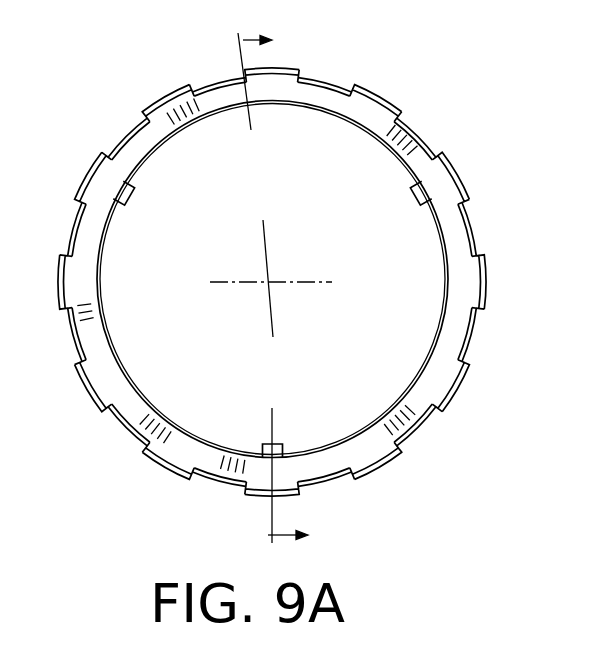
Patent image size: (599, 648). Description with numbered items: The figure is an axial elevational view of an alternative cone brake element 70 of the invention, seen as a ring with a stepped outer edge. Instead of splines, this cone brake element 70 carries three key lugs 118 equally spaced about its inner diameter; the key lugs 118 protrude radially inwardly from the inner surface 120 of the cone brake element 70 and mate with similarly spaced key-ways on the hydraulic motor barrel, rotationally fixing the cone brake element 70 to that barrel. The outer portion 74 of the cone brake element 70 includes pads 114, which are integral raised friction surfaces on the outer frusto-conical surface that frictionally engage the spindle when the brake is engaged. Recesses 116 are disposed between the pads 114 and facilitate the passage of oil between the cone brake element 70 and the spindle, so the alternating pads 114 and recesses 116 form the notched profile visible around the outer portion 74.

The cone brake element 70 is at (117, 79).
The outer portion 74 is at (406, 101).
The pads 114 is at (93, 170).
The recesses 116 is at (132, 135).
The key lugs 118 is at (281, 448).
The inner surface 120 is at (108, 327).